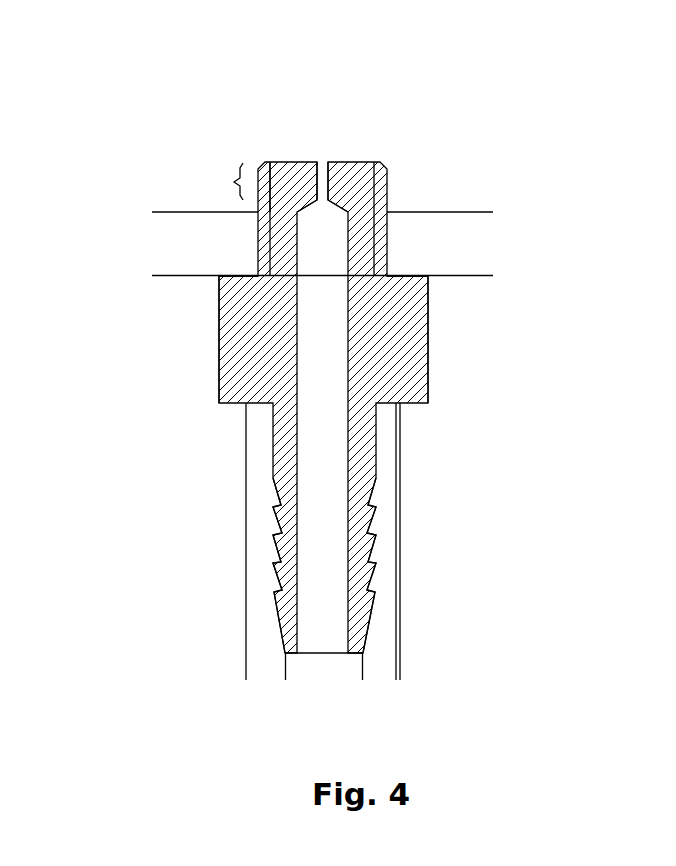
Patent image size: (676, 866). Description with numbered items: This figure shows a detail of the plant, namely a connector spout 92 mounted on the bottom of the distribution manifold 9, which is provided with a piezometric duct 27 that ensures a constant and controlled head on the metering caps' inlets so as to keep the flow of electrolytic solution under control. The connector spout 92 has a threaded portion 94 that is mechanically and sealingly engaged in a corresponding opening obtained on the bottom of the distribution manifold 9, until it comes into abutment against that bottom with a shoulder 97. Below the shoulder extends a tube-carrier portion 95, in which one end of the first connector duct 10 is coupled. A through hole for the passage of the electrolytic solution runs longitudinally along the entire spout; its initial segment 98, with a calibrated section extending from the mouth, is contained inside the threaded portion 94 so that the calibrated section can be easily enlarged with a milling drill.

The connector spout 92 is at (125, 93).
The piezometric duct 27 is at (325, 147).
The initial segment 98 is at (236, 182).
The distribution manifold 9 is at (213, 252).
The threaded portion 94 is at (372, 235).
The shoulder 97 is at (402, 273).
The tube-carrier portion 95 is at (368, 548).
The first connector duct 10 is at (255, 593).